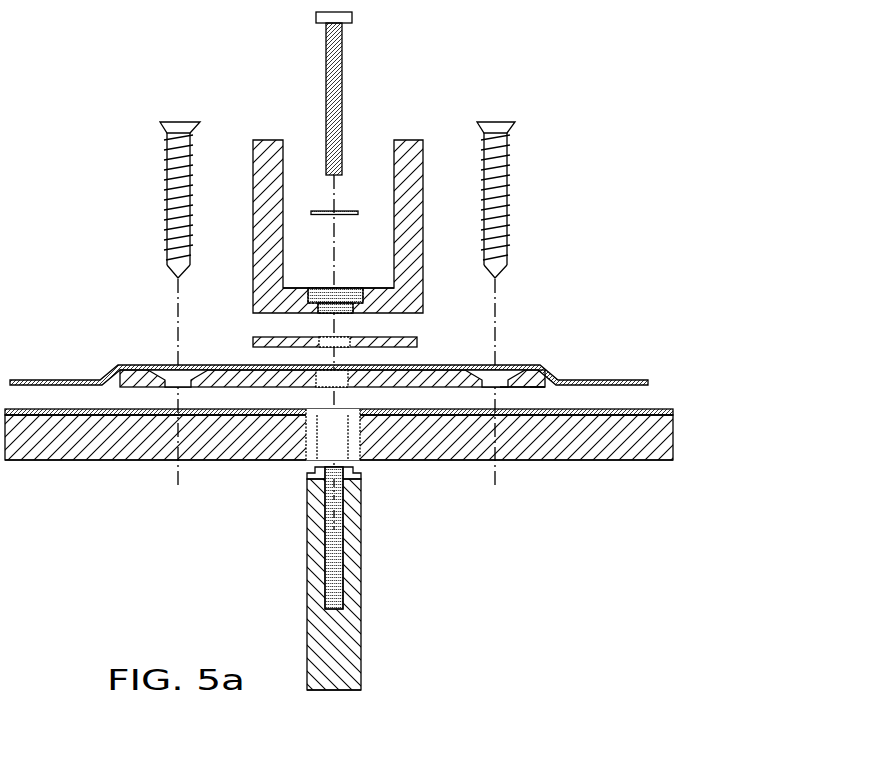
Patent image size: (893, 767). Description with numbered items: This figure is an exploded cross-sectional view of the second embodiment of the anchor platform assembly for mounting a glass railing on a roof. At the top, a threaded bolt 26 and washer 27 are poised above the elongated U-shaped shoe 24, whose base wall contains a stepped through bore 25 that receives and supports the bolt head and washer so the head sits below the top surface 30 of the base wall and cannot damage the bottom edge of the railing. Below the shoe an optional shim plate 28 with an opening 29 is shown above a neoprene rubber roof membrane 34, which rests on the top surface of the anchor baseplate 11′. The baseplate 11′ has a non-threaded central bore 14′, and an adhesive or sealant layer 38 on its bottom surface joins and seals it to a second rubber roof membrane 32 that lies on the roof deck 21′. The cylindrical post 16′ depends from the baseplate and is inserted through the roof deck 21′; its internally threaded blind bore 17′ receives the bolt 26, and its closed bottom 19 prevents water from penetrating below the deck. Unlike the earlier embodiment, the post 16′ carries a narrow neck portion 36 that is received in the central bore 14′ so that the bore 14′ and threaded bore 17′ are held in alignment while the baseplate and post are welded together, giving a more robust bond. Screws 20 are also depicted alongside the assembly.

The threaded bolt 26 is at (340, 53).
The washer 27 is at (349, 208).
The U-shaped shoe 24 is at (424, 213).
The through bore 25 is at (352, 296).
The top surface 30 is at (292, 288).
The shim plate 28 is at (418, 340).
The opening 29 is at (323, 336).
The non-threaded central bore 14′ is at (320, 372).
The rubber roof membrane 34 is at (628, 380).
The anchor baseplate 11′ is at (525, 368).
The adhesive layer 38 is at (535, 388).
The rubber roof membrane 32 is at (673, 410).
The roof deck 21′ is at (673, 440).
The narrow neck portion 36 is at (355, 472).
The cylindrical post 16′ is at (362, 657).
The internally threaded blind bore 17′ is at (338, 594).
The closed bottom 19 is at (330, 690).
The screw 20 is at (173, 190).